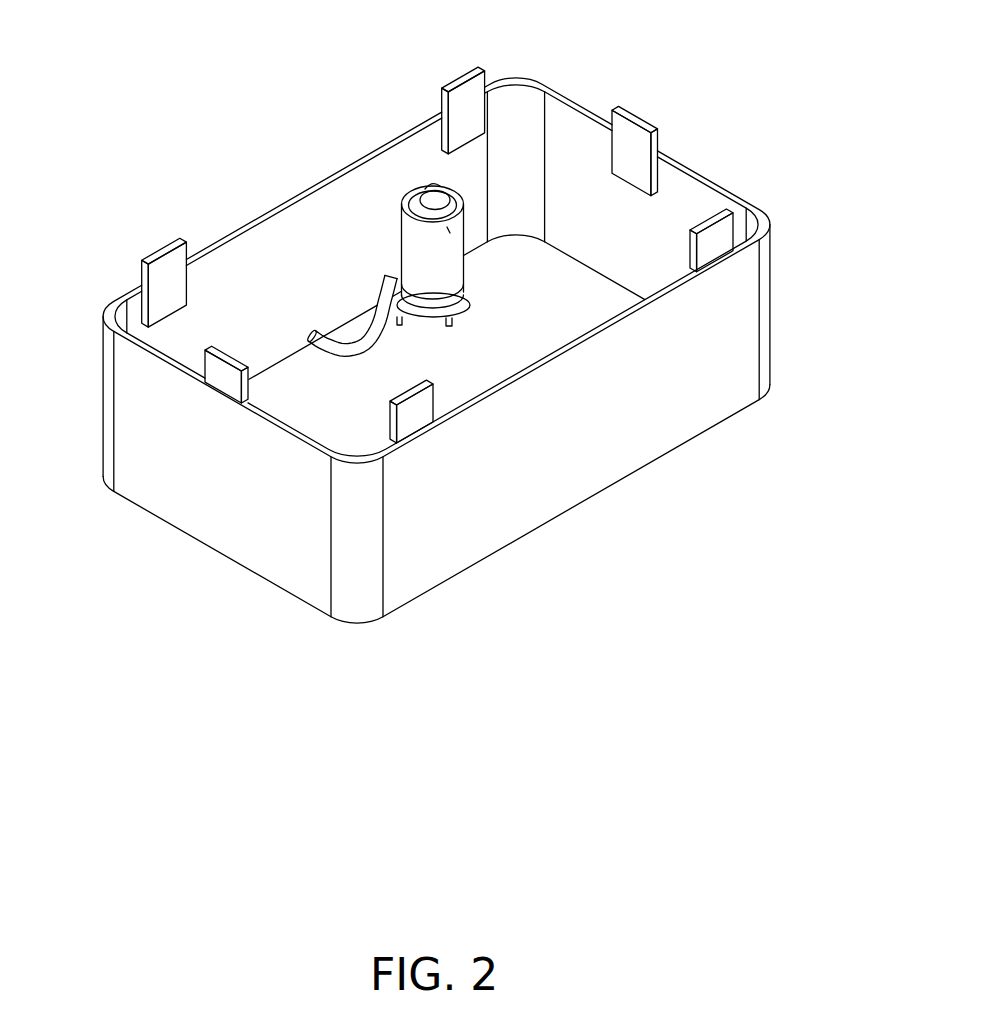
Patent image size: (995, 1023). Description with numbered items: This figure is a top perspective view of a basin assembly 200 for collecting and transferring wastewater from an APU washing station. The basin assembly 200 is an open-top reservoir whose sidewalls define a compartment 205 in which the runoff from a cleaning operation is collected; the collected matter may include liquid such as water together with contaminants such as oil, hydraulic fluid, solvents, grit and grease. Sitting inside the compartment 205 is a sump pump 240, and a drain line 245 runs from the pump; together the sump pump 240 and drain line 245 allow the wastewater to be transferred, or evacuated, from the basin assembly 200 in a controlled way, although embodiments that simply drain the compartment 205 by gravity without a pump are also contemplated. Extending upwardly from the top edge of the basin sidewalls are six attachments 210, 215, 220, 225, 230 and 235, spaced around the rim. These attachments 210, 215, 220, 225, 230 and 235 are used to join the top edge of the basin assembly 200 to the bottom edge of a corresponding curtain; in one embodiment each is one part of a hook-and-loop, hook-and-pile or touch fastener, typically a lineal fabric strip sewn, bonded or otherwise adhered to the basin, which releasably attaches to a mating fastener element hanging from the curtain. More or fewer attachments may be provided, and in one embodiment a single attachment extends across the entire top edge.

The basin assembly 200 is at (326, 178).
The compartment 205 is at (543, 330).
The attachment 210 is at (453, 83).
The attachment 215 is at (617, 110).
The attachment 220 is at (707, 233).
The attachment 225 is at (410, 408).
The attachment 230 is at (220, 365).
The attachment 235 is at (143, 257).
The sump pump 240 is at (463, 197).
The drain line 245 is at (375, 343).